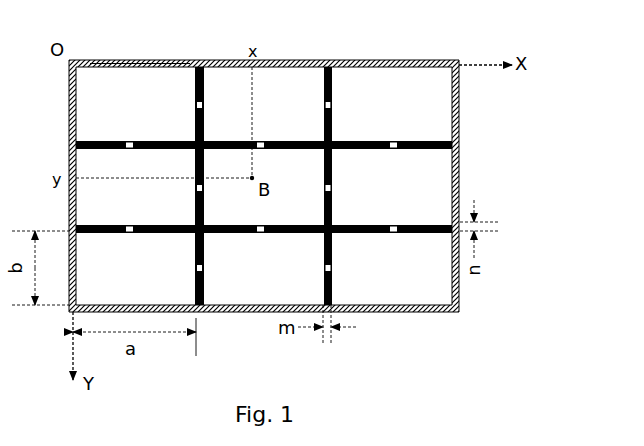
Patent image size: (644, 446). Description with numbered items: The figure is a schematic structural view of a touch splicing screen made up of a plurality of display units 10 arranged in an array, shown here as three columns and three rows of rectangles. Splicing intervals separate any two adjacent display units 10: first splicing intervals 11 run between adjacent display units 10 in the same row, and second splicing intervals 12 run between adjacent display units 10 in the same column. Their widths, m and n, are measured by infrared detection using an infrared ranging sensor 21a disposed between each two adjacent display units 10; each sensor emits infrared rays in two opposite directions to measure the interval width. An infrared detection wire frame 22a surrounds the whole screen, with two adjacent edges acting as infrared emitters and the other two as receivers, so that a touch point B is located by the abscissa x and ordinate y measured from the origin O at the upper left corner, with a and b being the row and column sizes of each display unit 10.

The display unit 10 is at (432, 110).
The first splicing interval 11 is at (328, 60).
The second splicing interval 12 is at (460, 147).
The infrared ranging sensor 21a is at (331, 104).
The infrared detection wire frame 22a is at (178, 60).